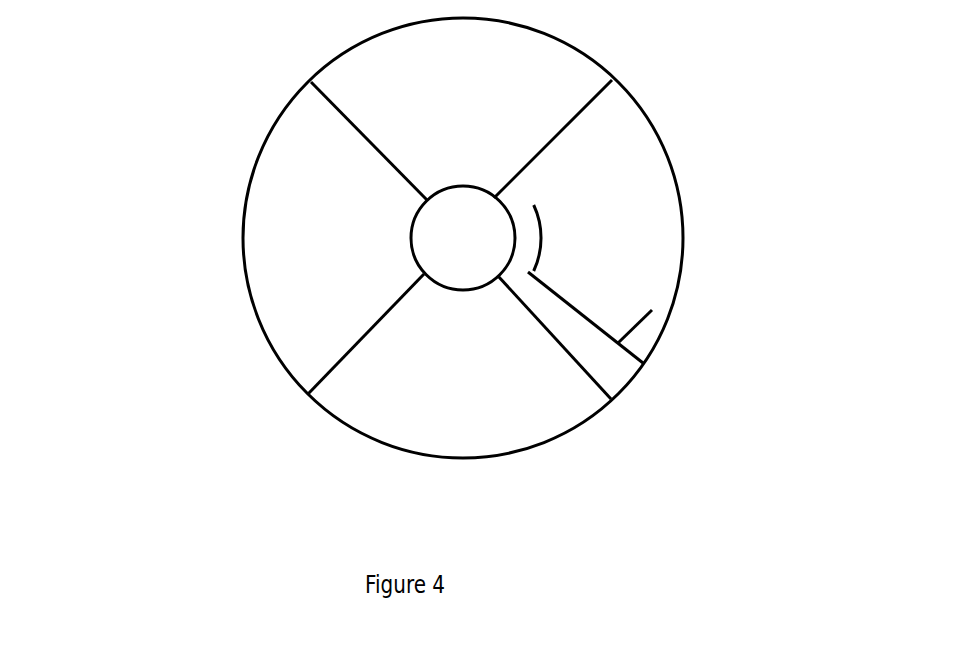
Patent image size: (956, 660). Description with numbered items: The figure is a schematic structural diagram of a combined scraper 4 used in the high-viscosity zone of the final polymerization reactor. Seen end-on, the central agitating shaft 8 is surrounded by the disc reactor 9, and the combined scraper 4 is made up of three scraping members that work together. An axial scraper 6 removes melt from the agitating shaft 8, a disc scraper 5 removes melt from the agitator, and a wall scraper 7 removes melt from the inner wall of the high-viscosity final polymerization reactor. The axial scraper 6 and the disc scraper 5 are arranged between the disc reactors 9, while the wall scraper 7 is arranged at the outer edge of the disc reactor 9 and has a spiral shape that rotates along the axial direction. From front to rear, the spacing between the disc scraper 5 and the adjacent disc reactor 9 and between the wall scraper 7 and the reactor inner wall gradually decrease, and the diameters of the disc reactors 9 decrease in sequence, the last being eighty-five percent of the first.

The combined scraper 4 is at (608, 360).
The disc scraper 5 is at (568, 297).
The axial scraper 6 is at (543, 223).
The wall scraper 7 is at (640, 330).
The agitating shaft 8 is at (442, 246).
The disc reactor 9 is at (300, 160).